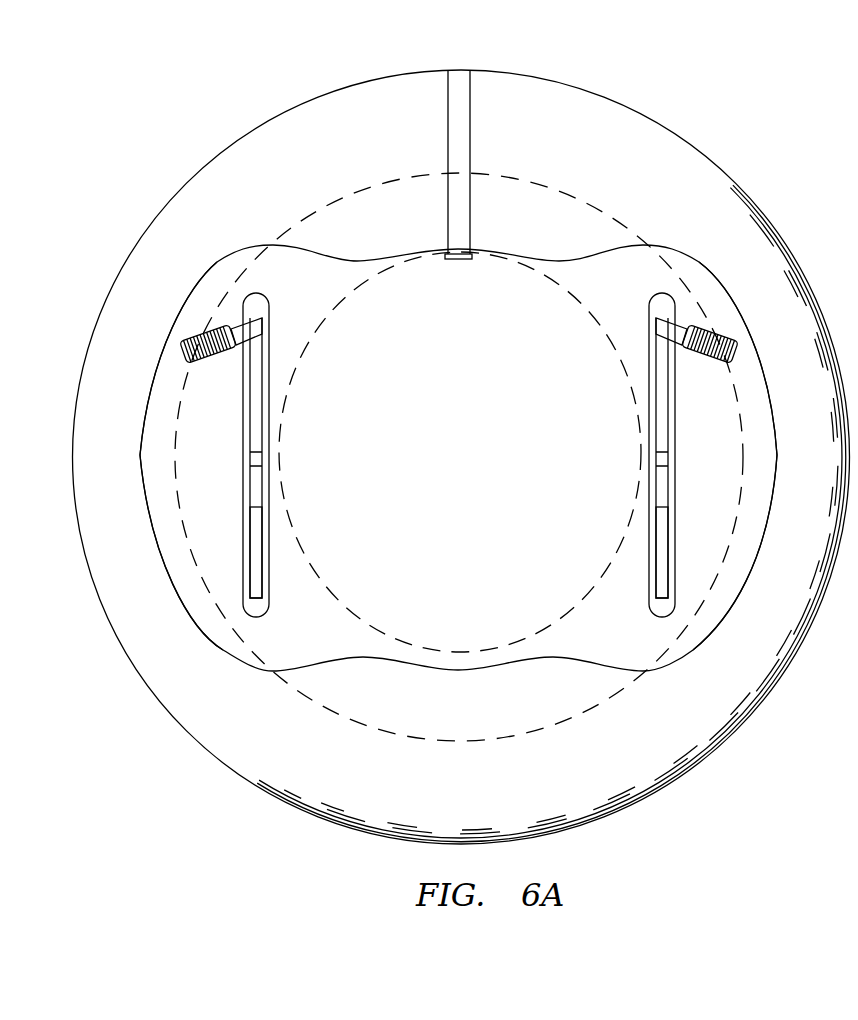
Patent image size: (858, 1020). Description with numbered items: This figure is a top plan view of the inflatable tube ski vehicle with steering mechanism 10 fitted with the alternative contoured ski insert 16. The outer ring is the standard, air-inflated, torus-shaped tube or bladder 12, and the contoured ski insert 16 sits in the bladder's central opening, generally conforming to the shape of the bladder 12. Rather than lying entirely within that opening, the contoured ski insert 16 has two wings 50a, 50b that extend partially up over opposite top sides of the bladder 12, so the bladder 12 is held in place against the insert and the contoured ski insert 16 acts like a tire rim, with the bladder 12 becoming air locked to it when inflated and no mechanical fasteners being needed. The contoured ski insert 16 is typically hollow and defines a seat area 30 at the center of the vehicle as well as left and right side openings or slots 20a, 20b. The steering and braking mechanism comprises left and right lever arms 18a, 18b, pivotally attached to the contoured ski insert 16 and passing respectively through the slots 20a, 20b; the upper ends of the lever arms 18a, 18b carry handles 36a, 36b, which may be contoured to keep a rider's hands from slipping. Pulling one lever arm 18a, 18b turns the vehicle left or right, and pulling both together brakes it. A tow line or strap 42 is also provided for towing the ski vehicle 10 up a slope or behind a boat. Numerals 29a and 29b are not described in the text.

The inflatable tube ski vehicle with steering mechanism 10 is at (137, 162).
The tube or bladder 12 is at (734, 186).
The contoured ski insert 16 is at (450, 660).
The left lever arm 18a is at (262, 397).
The right lever arm 18b is at (656, 397).
The left side opening or slot 20a is at (268, 545).
The right side opening or slot 20b is at (650, 545).
The upper rim portion 29a is at (618, 112).
The lower rim portion 29b is at (613, 805).
The seat area 30 is at (490, 538).
The handle 36a is at (215, 357).
The handle 36b is at (703, 357).
The tow line or strap 42 is at (469, 157).
The wing 50a is at (198, 490).
The wing 50b is at (724, 490).